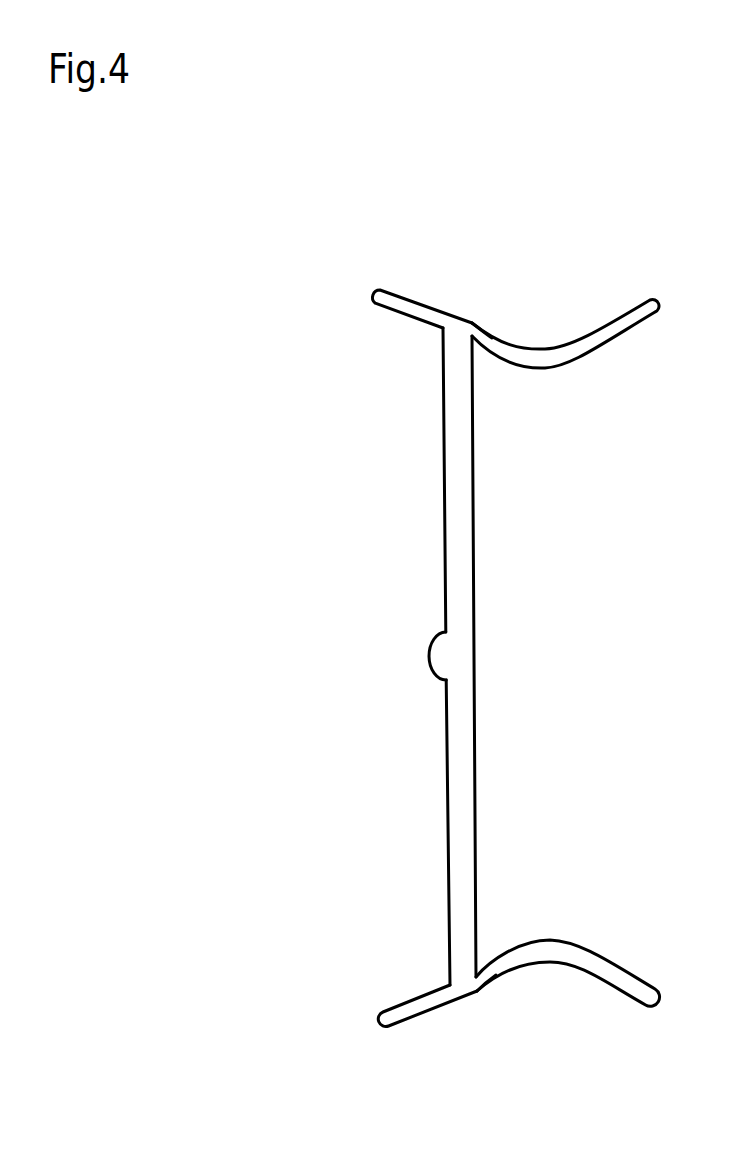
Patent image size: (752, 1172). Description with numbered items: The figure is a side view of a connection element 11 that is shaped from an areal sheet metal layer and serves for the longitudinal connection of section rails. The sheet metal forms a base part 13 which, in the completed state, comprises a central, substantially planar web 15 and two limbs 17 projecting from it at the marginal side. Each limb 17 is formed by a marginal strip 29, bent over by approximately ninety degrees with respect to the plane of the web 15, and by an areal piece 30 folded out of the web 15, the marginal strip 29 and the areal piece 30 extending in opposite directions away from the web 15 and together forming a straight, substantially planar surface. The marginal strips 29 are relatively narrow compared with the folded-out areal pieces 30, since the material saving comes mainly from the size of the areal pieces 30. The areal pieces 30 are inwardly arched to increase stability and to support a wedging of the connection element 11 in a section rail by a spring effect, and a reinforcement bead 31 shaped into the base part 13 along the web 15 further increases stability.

The connection element 11 is at (301, 189).
The base part 13 is at (406, 911).
The web 15 is at (346, 545).
The limb 17 is at (501, 306).
The marginal strip 29 is at (393, 300).
The folded-out areal piece 30 is at (610, 337).
The reinforcement bead 31 is at (437, 655).